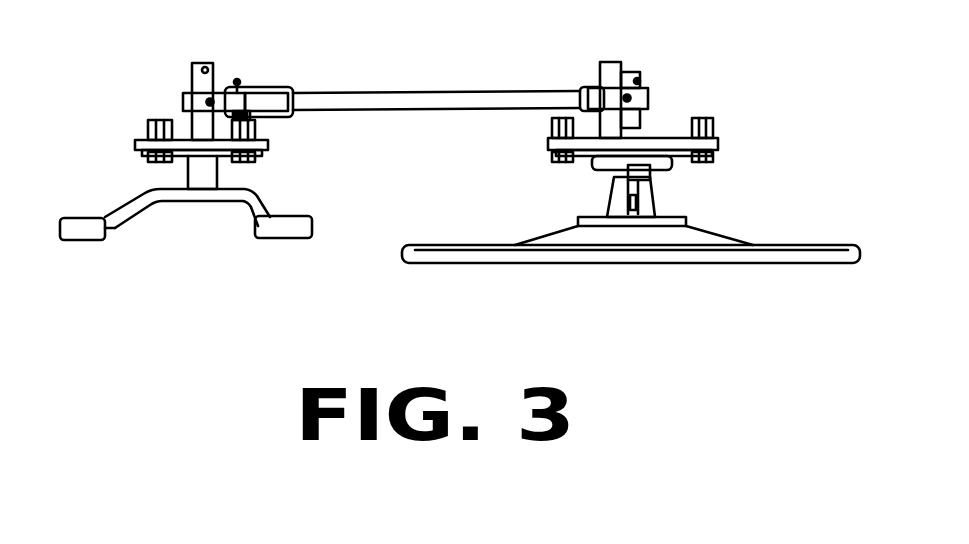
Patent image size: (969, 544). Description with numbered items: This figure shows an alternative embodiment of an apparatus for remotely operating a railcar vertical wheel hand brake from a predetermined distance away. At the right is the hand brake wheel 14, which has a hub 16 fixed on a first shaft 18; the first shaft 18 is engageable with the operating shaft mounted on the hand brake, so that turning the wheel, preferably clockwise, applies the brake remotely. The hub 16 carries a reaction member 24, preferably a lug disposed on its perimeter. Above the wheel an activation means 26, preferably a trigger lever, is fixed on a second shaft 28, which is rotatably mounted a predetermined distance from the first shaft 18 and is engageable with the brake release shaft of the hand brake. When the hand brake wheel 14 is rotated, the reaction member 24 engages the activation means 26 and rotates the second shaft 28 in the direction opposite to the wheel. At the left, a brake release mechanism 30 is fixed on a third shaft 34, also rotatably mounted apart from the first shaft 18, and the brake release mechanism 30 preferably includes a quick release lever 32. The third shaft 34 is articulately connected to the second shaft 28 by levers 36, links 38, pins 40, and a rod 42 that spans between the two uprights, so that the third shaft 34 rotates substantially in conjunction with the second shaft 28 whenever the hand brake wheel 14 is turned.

The hand brake wheel 14 is at (755, 252).
The hub 16 is at (653, 207).
The first shaft 18 is at (640, 128).
The reaction member 24 is at (628, 200).
The activation means 26 is at (593, 162).
The second shaft 28 is at (598, 78).
The brake release mechanism 30 is at (270, 278).
The quick release lever 32 is at (296, 225).
The third shaft 34 is at (193, 80).
The levers 36 is at (222, 96).
The links 38 is at (272, 88).
The pins 40 is at (238, 81).
The rod 42 is at (438, 92).